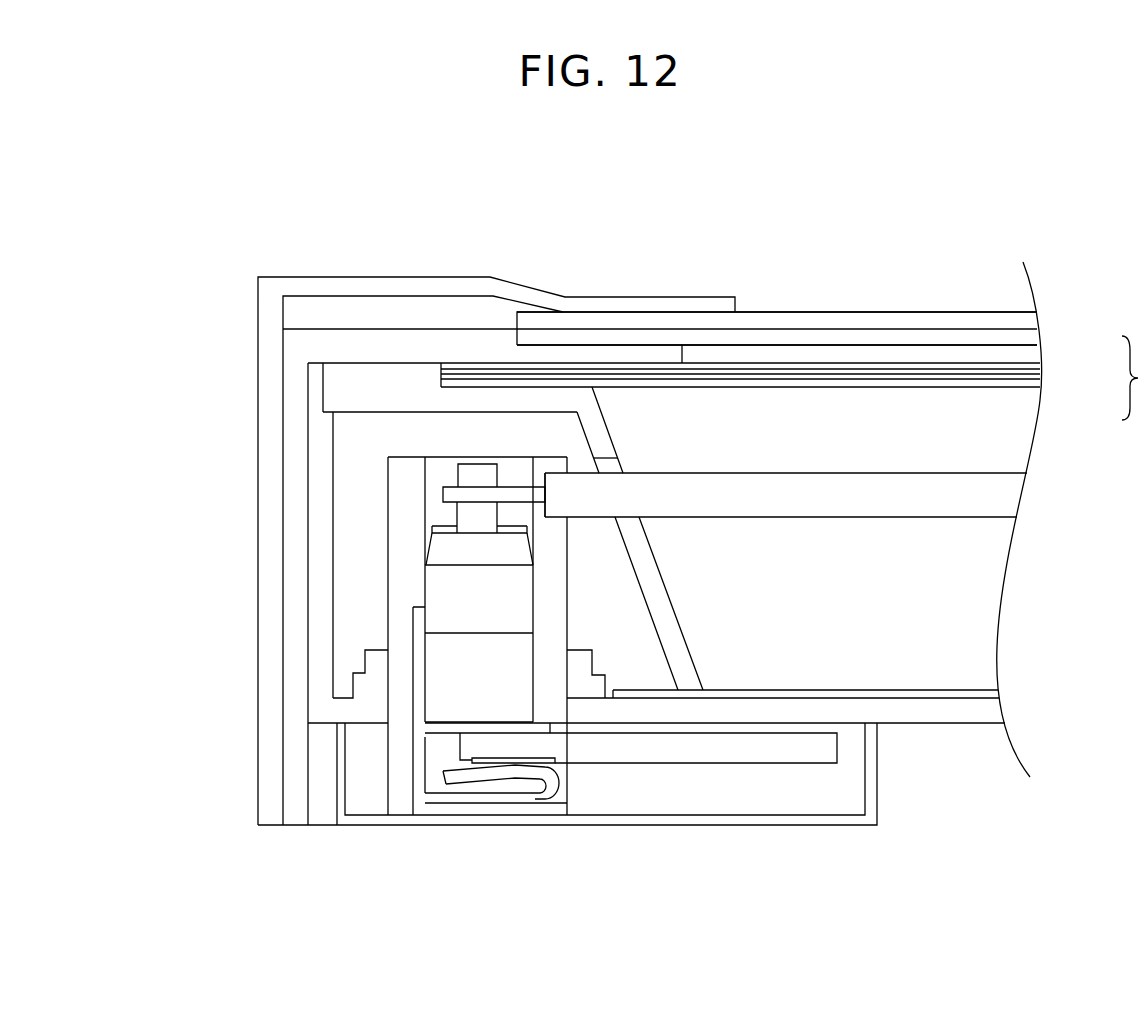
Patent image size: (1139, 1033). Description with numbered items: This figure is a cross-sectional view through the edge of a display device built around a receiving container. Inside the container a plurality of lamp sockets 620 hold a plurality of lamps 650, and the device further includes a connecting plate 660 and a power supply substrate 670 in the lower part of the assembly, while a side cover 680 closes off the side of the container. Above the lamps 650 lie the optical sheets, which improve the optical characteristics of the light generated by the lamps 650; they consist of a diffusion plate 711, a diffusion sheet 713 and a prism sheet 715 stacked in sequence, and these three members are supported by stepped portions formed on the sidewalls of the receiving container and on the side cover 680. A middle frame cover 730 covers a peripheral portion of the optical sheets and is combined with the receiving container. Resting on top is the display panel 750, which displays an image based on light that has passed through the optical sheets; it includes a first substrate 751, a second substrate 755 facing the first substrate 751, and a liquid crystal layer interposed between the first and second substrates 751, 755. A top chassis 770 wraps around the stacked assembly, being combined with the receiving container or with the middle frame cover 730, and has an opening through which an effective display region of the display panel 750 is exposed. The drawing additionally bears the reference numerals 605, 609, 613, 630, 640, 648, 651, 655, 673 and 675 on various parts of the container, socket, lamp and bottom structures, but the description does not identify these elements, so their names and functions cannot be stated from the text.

The lower substrate 605 is at (980, 713).
The upper substrate 609 is at (977, 694).
The side wall 613 is at (318, 585).
The lamp socket 620 is at (170, 408).
The housing 630 is at (398, 500).
The light emitting element 640 is at (478, 470).
The elastic member 648 is at (520, 773).
The lamp 650 is at (655, 207).
The connection bar 651 is at (662, 486).
The connector 655 is at (513, 497).
The connecting plate 660 is at (360, 688).
The power supply substrate 670 is at (693, 745).
The fixing plate 673 is at (553, 760).
The bottom cover 675 is at (873, 805).
The side cover 680 is at (462, 403).
The diffusion plate 711 is at (1044, 383).
The diffusion sheet 713 is at (1044, 373).
The prism sheet 715 is at (1044, 363).
The middle frame cover 730 is at (317, 346).
The display panel 750 is at (930, 207).
The first substrate 751 is at (917, 338).
The second substrate 755 is at (818, 324).
The top chassis 770 is at (272, 311).